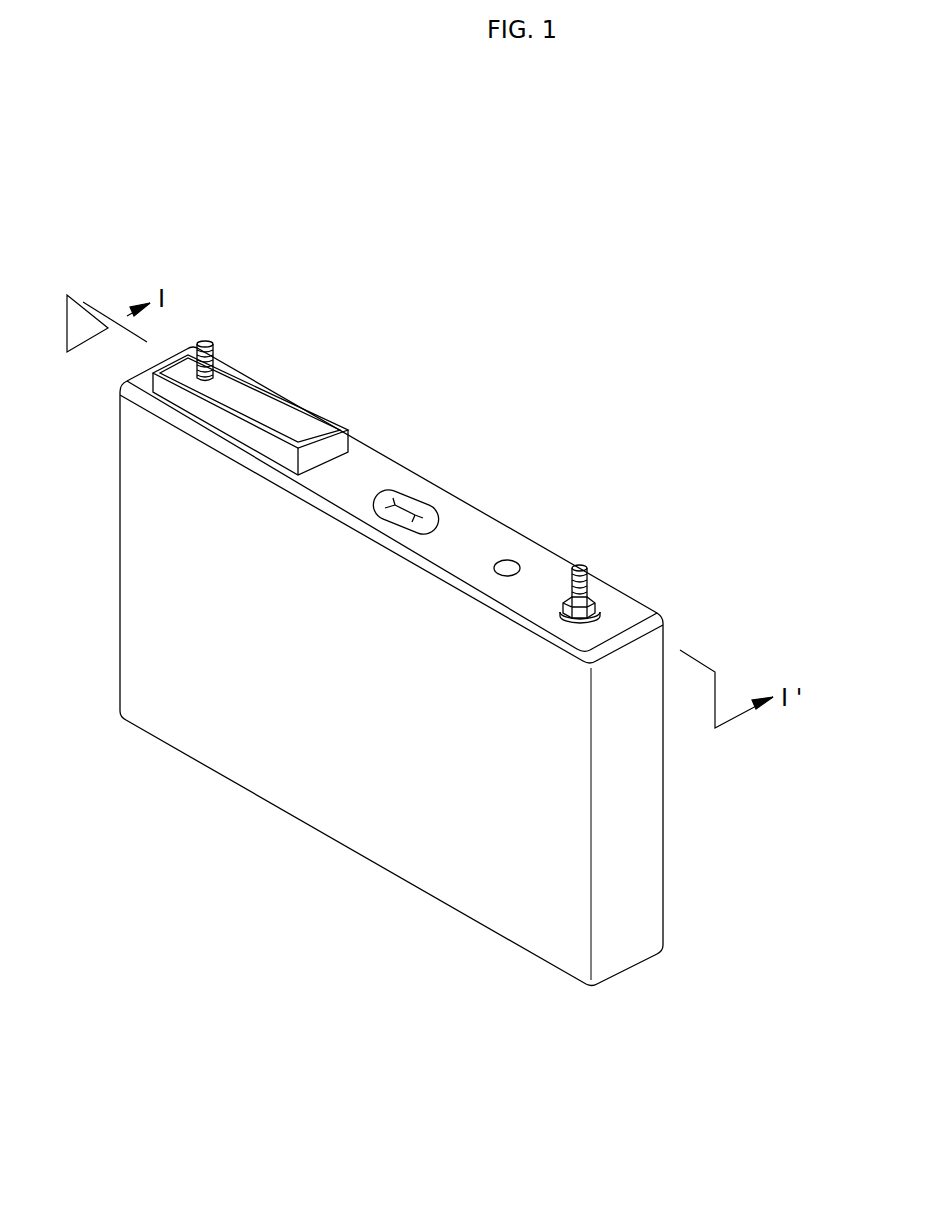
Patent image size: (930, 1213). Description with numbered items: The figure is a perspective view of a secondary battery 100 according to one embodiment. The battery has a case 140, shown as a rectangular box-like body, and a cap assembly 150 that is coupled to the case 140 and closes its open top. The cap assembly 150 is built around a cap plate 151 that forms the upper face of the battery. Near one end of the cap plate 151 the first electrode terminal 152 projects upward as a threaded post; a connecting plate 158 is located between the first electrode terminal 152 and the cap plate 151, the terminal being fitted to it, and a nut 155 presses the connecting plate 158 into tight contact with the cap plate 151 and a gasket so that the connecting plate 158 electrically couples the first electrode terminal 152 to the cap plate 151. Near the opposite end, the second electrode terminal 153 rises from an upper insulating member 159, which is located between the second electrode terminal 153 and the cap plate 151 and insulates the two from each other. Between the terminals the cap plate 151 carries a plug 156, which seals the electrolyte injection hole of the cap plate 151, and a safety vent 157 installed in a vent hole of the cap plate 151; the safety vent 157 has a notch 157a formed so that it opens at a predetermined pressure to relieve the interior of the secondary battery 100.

The secondary battery 100 is at (438, 330).
The case 140 is at (333, 823).
The cap assembly 150 is at (492, 518).
The cap plate 151 is at (363, 465).
The first electrode terminal 152 is at (580, 565).
The second electrode terminal 153 is at (205, 345).
The nut 155 is at (590, 598).
The plug 156 is at (510, 562).
The safety vent 157 is at (410, 494).
The notch 157a is at (413, 512).
The connecting plate 158 is at (598, 612).
The upper insulating member 159 is at (285, 388).